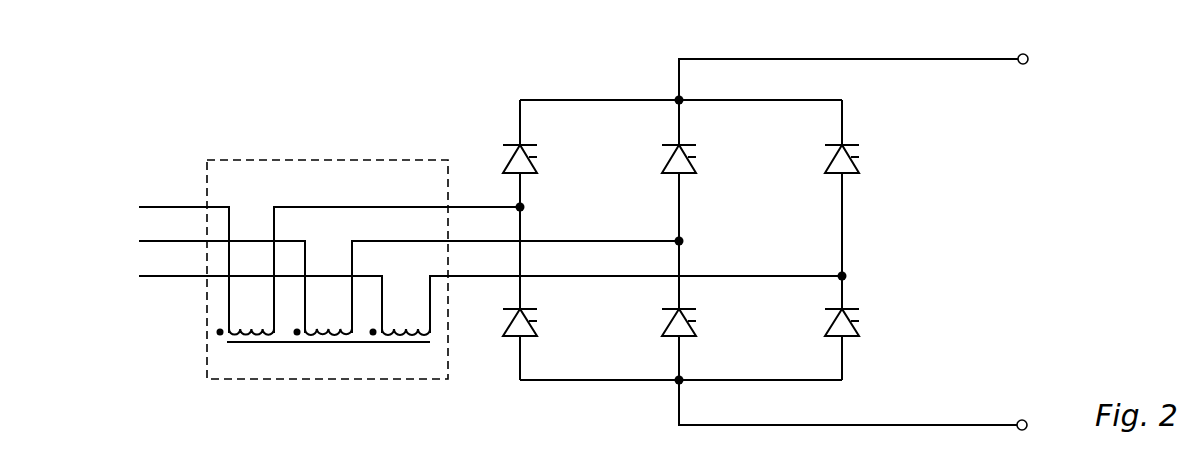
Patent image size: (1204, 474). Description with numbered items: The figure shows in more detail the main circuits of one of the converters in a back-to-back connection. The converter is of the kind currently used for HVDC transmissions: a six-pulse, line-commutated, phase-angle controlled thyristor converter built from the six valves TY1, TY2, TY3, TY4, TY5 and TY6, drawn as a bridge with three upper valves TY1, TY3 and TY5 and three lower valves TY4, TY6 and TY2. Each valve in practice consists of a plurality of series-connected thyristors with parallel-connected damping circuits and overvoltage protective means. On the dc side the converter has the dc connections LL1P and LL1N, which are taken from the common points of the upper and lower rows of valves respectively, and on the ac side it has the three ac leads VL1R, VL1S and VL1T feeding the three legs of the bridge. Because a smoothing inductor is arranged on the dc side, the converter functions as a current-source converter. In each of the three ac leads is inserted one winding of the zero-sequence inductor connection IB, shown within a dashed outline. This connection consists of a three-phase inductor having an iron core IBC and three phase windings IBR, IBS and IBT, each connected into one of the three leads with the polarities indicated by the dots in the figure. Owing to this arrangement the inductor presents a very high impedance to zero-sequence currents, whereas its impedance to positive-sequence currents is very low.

The ac lead VL1R is at (162, 206).
The ac lead VL1S is at (162, 240).
The ac lead VL1T is at (162, 275).
The zero-sequence inductor connection IB is at (438, 190).
The phase winding IBR is at (247, 323).
The phase winding IBS is at (325, 323).
The phase winding IBT is at (402, 323).
The iron core IBC is at (330, 343).
The valve TY1 is at (541, 150).
The valve TY2 is at (863, 314).
The valve TY3 is at (700, 150).
The valve TY4 is at (541, 314).
The valve TY5 is at (863, 150).
The valve TY6 is at (700, 314).
The dc connection LL1P is at (1026, 53).
The dc connection LL1N is at (1025, 419).